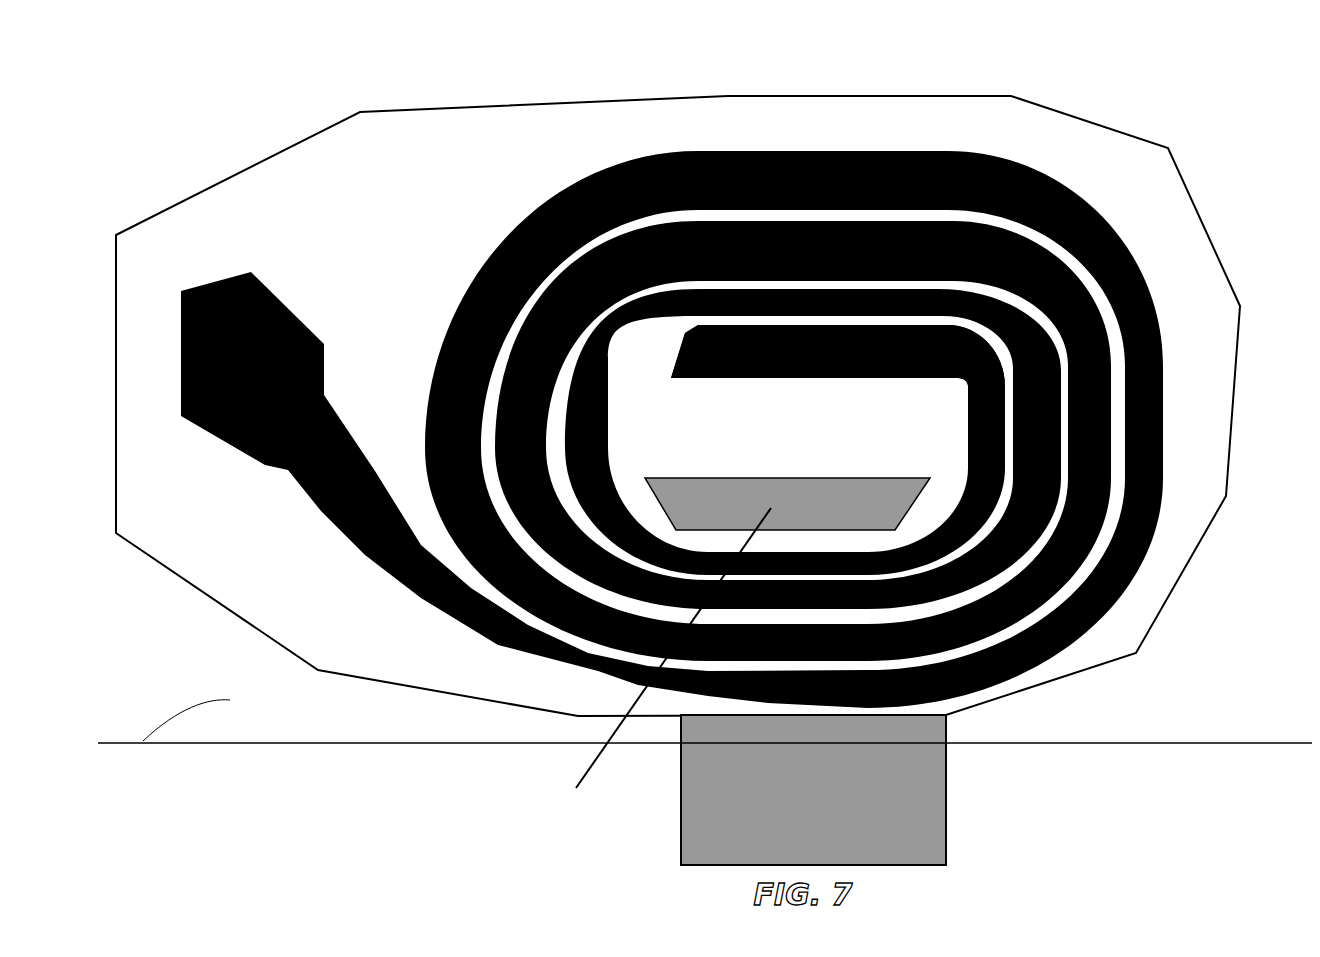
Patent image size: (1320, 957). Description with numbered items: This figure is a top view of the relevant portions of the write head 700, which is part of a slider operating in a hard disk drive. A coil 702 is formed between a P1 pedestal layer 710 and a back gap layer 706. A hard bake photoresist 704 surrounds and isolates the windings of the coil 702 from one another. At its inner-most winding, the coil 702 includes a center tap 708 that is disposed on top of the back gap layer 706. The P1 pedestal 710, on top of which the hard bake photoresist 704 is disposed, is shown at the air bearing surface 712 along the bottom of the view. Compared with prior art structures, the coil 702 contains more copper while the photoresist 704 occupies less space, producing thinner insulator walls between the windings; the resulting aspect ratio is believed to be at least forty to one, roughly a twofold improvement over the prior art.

The write head 700 is at (705, 470).
The coil 702 is at (430, 341).
The hard bake photoresist 704 is at (1183, 413).
The back gap layer 706 is at (773, 465).
The center tap 708 is at (851, 372).
The P1 pedestal layer 710 is at (930, 820).
The ABS 712 is at (1165, 735).